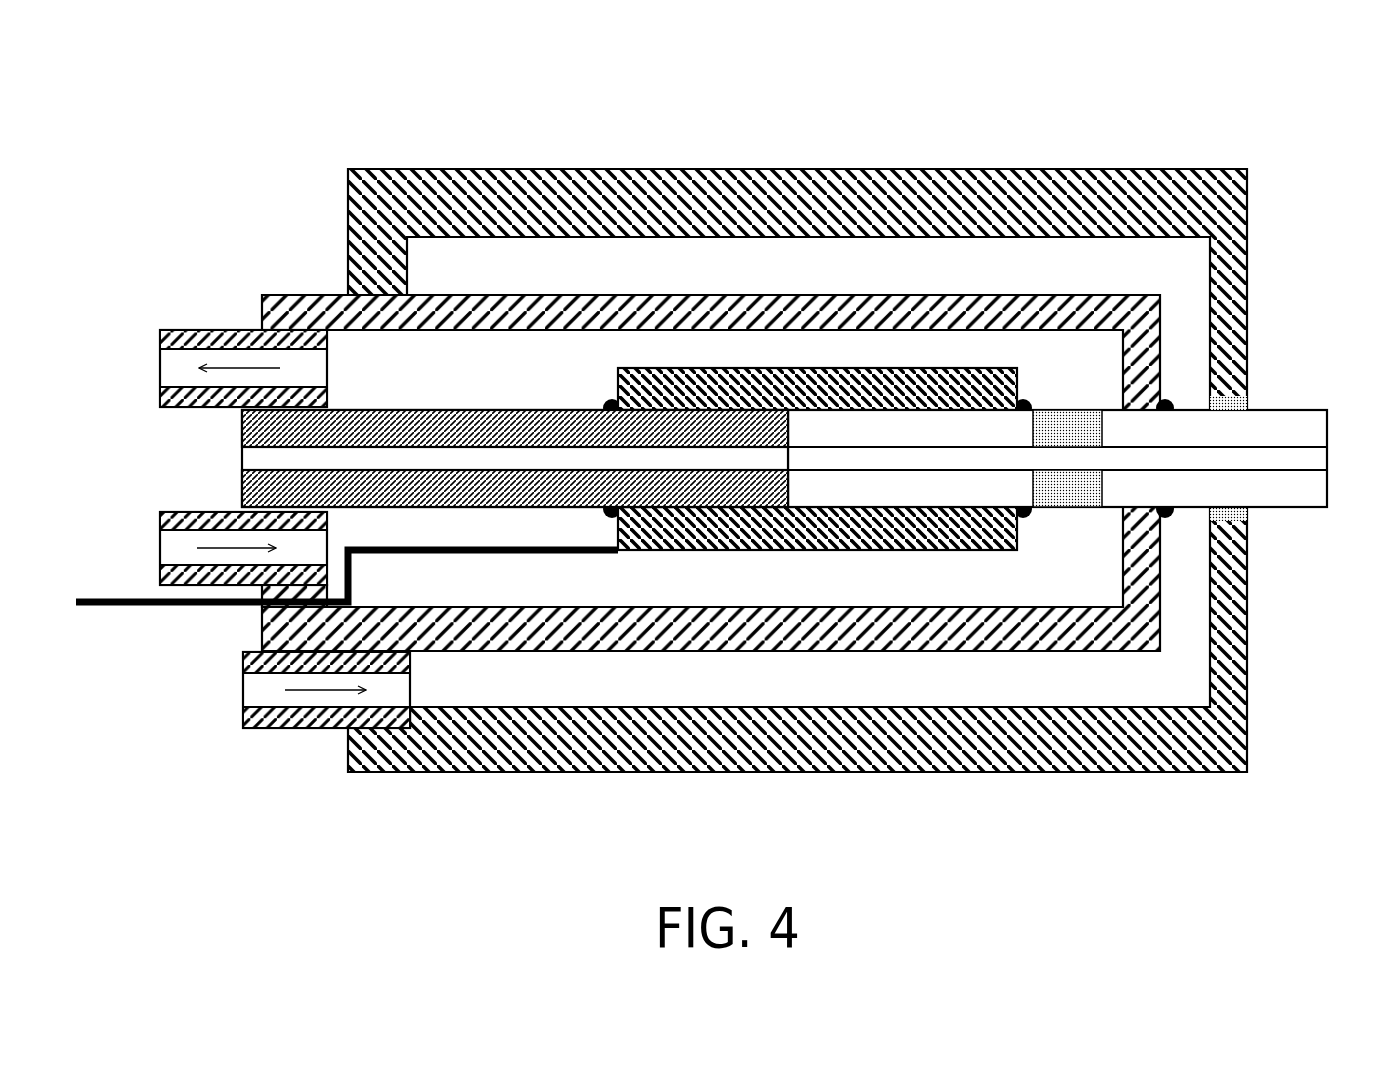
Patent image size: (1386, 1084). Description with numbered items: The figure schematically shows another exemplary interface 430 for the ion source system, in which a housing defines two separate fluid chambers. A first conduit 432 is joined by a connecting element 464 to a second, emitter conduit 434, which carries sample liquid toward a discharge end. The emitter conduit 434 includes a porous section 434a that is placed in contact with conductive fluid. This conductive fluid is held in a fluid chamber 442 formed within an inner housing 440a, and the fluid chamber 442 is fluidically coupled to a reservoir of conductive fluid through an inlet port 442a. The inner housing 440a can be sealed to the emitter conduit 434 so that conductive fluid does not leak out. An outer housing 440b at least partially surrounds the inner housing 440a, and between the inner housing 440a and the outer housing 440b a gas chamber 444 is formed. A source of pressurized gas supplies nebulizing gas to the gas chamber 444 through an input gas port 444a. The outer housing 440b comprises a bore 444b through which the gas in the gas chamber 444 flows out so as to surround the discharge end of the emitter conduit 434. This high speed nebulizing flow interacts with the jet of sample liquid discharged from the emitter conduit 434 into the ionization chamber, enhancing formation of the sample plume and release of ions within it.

The interface 430 is at (358, 126).
The first conduit 432 is at (503, 433).
The emitter conduit 434 is at (1061, 423).
The porous section 434a is at (1068, 437).
The inner housing 440a is at (780, 295).
The outer housing 440b is at (970, 169).
The fluid chamber 442 is at (408, 382).
The inlet port 442a is at (159, 512).
The gas chamber 444 is at (598, 277).
The input gas port 444a is at (243, 733).
The bore 444b is at (1248, 406).
The connecting element 464 is at (673, 552).